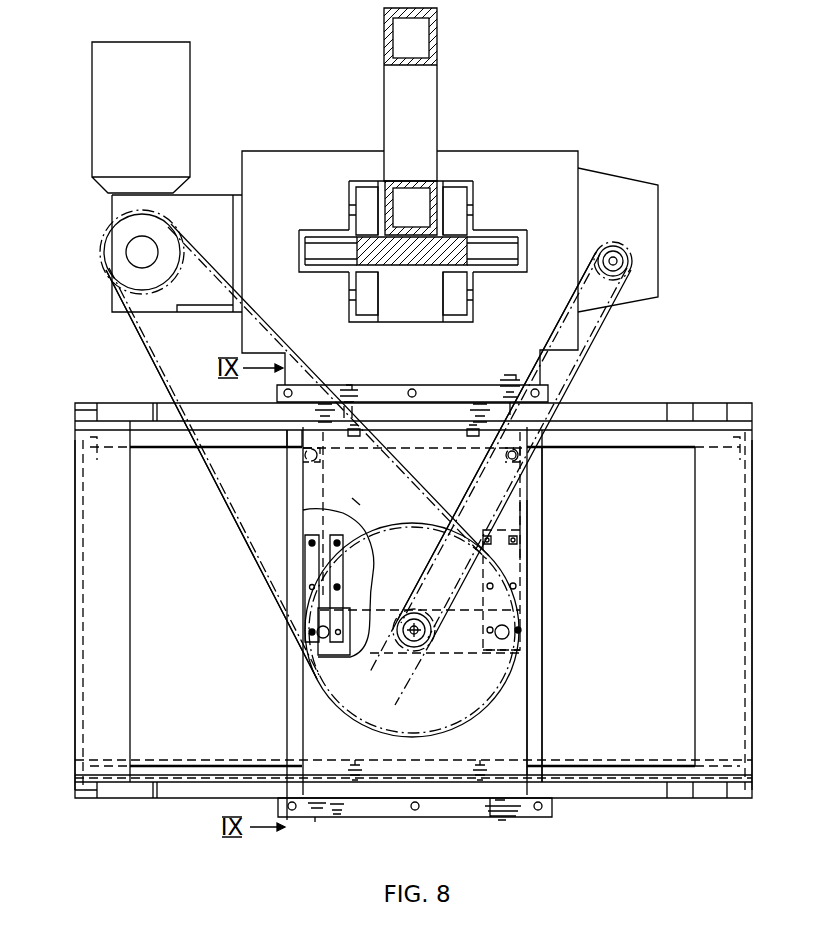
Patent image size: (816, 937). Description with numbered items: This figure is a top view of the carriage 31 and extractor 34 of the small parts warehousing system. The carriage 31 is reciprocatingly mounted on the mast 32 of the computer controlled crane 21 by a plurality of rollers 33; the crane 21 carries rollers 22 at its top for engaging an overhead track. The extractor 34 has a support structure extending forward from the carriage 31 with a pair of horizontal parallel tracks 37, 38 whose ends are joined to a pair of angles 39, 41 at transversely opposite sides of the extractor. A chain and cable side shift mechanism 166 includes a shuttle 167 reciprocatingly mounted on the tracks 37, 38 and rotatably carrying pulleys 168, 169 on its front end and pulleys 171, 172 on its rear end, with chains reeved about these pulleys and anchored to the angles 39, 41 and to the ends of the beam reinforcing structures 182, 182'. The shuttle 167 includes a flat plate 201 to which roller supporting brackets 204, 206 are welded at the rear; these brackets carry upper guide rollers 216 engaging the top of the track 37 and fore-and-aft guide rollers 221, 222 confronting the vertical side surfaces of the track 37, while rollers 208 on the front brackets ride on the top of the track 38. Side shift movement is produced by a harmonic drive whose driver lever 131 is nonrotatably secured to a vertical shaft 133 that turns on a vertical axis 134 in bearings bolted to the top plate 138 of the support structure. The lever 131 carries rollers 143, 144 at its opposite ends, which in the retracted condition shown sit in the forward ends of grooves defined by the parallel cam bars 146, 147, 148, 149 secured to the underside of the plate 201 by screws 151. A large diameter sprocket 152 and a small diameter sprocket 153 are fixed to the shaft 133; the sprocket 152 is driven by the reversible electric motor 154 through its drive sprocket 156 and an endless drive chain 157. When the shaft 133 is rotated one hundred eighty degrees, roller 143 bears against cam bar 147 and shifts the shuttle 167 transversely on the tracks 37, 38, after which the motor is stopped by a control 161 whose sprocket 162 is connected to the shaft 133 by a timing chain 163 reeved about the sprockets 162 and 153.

The crane 21 is at (437, 55).
The rollers 22 is at (232, 447).
The carriage 31 is at (533, 152).
The mast 32 is at (409, 262).
The rollers 33 is at (358, 222).
The extractor 34 is at (136, 820).
The track 37 is at (292, 449).
The track 38 is at (272, 765).
The angle 39 is at (75, 620).
The angle 41 is at (752, 620).
The driver lever 131 is at (352, 657).
The vertical shaft 133 is at (430, 608).
The vertical axis 134 is at (428, 643).
The top plate 138 is at (290, 692).
The roller 143 is at (312, 638).
The roller 144 is at (522, 649).
The cam bar 146 is at (303, 560).
The cam bar 147 is at (340, 588).
The cam bar 148 is at (494, 630).
The cam bar 149 is at (527, 572).
The screws 151 is at (306, 630).
The large diameter sprocket 152 is at (408, 526).
The small diameter sprocket 153 is at (402, 676).
The reversible electric motor 154 is at (190, 108).
The drive sprocket 156 is at (102, 236).
The endless drive chain 157 is at (232, 512).
The control 161 is at (605, 178).
The sprocket 162 is at (615, 245).
The timing chain 163 is at (603, 331).
The chain and cable side shift mechanism 166 is at (432, 712).
The shuttle 167 is at (527, 507).
The pulley 168 is at (313, 820).
The pulley 169 is at (515, 812).
The pulley 171 is at (347, 388).
The pulley 172 is at (510, 380).
The beam reinforcing structure 182 is at (415, 822).
The reinforcing structure 182' is at (412, 372).
The flat plate 201 is at (532, 707).
The roller supporting bracket 204 is at (312, 470).
The roller supporting bracket 206 is at (548, 438).
The roller 208 is at (354, 763).
The roller 216 is at (325, 458).
The roller 221 is at (538, 462).
The roller 222 is at (285, 408).